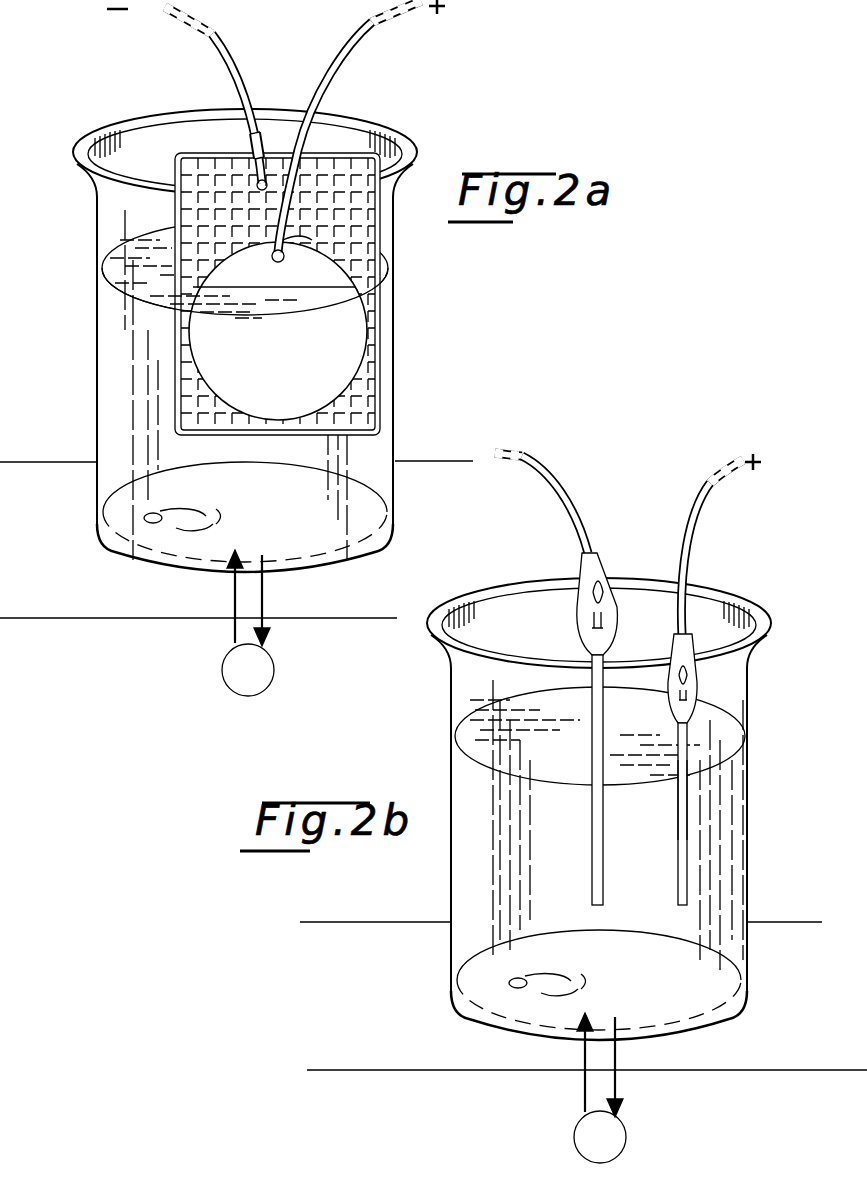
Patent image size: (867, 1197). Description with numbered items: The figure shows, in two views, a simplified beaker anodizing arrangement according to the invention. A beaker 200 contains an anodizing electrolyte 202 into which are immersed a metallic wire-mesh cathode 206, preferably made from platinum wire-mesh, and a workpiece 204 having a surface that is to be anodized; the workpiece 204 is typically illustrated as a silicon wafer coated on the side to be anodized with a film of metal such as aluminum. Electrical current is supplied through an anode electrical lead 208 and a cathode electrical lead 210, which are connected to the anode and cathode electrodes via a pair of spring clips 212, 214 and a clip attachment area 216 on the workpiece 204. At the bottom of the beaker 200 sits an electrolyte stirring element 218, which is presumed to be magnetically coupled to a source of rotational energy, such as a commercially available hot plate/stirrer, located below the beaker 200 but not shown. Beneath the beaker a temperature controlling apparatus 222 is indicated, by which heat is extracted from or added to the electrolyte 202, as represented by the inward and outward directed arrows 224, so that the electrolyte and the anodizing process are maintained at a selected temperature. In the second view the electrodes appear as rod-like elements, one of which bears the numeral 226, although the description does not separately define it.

In FIG. 2A, the beaker 200 is at (92, 253).
In FIG. 2A, the anodizing electrolyte 202 is at (165, 334).
In FIG. 2B, the anodizing electrolyte 202 is at (548, 900).
In FIG. 2A, the workpiece 204 is at (368, 323).
In FIG. 2B, the workpiece 204 is at (698, 882).
In FIG. 2A, the metallic wire-mesh cathode 206 is at (354, 210).
In FIG. 2B, the metallic wire-mesh cathode 206 is at (589, 838).
In FIG. 2A, the anode electrical lead 208 is at (333, 78).
In FIG. 2B, the anode electrical lead 208 is at (700, 556).
In FIG. 2A, the cathode electrical lead 210 is at (227, 72).
In FIG. 2B, the cathode electrical lead 210 is at (575, 524).
In FIG. 2A, the spring clip 212 is at (358, 293).
In FIG. 2B, the spring clip 212 is at (702, 690).
In FIG. 2A, the spring clip 214 is at (266, 142).
In FIG. 2B, the spring clip 214 is at (605, 569).
In FIG. 2A, the clip attachment area 216 is at (330, 269).
In FIG. 2A, the electrolyte stirring element 218 is at (160, 507).
In FIG. 2B, the electrolyte stirring element 218 is at (534, 970).
In FIG. 2A, the temperature controlling apparatus 222 is at (276, 673).
In FIG. 2B, the temperature controlling apparatus 222 is at (626, 1127).
In FIG. 2A, the inward and outward directed arrows 224 is at (265, 592).
In FIG. 2B, the inward and outward directed arrows 224 is at (617, 1052).
In FIG. 2B, the rod electrode portion 226 is at (676, 818).